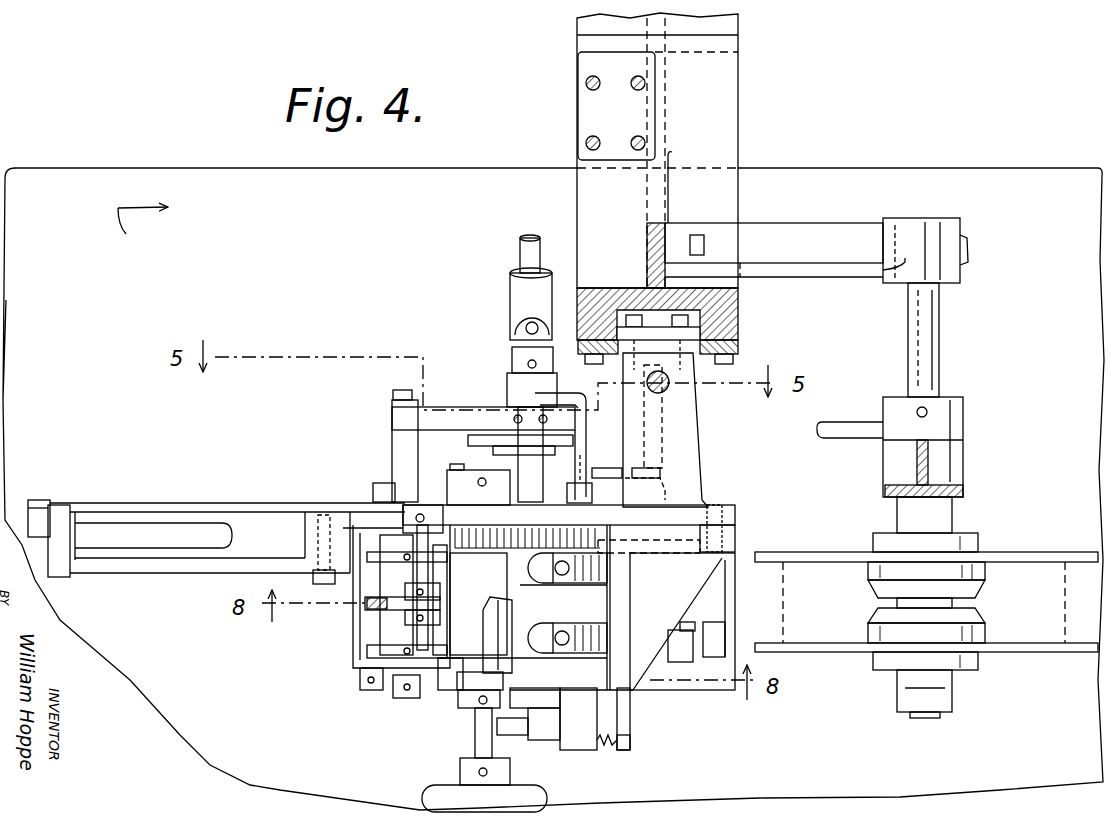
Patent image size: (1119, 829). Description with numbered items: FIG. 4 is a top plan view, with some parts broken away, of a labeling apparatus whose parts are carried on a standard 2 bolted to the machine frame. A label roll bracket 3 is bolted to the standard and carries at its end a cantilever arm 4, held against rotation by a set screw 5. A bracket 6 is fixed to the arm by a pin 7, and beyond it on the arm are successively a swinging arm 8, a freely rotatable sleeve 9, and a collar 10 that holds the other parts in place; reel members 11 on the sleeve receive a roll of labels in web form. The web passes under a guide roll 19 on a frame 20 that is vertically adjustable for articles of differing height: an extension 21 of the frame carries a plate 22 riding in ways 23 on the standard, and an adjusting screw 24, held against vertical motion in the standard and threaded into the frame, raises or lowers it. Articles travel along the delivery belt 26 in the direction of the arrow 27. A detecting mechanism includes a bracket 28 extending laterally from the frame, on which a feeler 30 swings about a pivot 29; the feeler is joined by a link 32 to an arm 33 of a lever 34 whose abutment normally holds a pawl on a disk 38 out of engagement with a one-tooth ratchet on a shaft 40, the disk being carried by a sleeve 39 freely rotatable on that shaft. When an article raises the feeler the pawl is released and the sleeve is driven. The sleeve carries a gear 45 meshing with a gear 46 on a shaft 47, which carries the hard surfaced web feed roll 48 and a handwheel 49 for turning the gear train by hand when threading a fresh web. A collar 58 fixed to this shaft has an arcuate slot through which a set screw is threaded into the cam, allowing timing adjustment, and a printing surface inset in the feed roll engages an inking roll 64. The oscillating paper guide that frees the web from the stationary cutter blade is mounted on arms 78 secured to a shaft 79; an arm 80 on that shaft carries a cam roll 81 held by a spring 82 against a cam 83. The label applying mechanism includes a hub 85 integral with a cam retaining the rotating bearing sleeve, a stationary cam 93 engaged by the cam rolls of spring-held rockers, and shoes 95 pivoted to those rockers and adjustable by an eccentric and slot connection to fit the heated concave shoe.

The standard 2 is at (728, 143).
The label roll bracket 3 is at (835, 232).
The cantilever arm 4 is at (927, 350).
The set screw 5 is at (970, 252).
The bracket 6 is at (848, 428).
The pin 7 is at (928, 412).
The swinging arm 8 is at (945, 470).
The freely rotatable sleeve 9 is at (940, 518).
The collar 10 is at (945, 700).
The reel members 11 is at (1055, 642).
The guide roll 19 is at (493, 616).
The frame 20 is at (735, 510).
The extension 21 is at (698, 455).
The plate 22 is at (666, 335).
The ways 23 is at (612, 300).
The adjusting screw 24 is at (655, 395).
The delivery belt 26 is at (268, 170).
The arrow 27 is at (143, 226).
The bracket 28 is at (195, 572).
The pivot 29 is at (65, 575).
The feeler 30 is at (215, 530).
The link 32 is at (270, 503).
The arm 33 is at (385, 483).
The lever 34 is at (450, 418).
The disk 38 is at (482, 438).
The sleeve 39 is at (520, 465).
The shaft 40 is at (505, 388).
The gear 45 is at (540, 500).
The gear 46 is at (448, 510).
The shaft 47 is at (478, 716).
The hard surfaced web feed roll 48 is at (478, 604).
The handwheel 49 is at (435, 795).
The collar 58 is at (452, 478).
The inking roll 64 is at (515, 635).
The arms 78 is at (563, 569).
The shaft 79 is at (592, 598).
The arm 80 is at (560, 752).
The cam roll 81 is at (497, 730).
The spring 82 is at (607, 745).
The cam 83 is at (538, 742).
The hub 85 is at (668, 665).
The stationary cam 93 is at (690, 650).
The shoe 95 is at (718, 640).